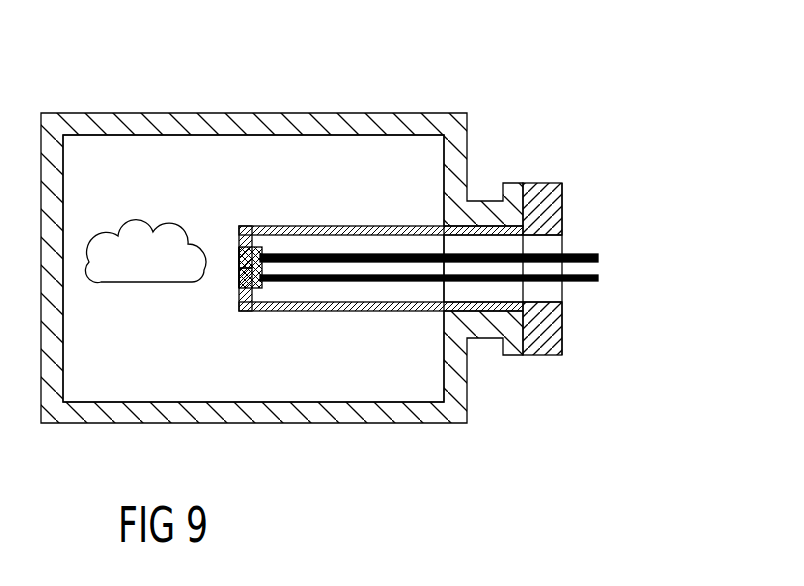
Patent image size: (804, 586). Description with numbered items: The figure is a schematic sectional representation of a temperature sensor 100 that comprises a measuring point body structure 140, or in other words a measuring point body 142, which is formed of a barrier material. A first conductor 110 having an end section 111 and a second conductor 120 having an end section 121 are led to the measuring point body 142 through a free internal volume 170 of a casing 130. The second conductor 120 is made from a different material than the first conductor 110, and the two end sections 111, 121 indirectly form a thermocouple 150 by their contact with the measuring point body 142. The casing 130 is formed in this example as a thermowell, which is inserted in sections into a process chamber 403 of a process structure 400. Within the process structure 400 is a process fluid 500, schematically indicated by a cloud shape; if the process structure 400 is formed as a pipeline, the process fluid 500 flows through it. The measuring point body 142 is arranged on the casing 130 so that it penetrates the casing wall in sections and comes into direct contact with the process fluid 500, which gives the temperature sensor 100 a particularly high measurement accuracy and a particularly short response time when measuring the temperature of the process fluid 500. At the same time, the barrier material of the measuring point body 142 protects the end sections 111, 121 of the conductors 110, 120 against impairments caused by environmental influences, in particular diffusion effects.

The temperature sensor 100 is at (590, 178).
The first conductor 110 is at (600, 257).
The end section 111 is at (262, 238).
The second conductor 120 is at (600, 280).
The end section 121 is at (260, 307).
The casing 130 is at (410, 221).
The measuring point body structure 140 is at (157, 232).
The measuring point body 142 is at (238, 250).
The thermocouple 150 is at (234, 285).
The free internal volume 170 is at (467, 242).
The process structure 400 is at (417, 110).
The process chamber 403 is at (199, 146).
The process fluid 500 is at (168, 270).